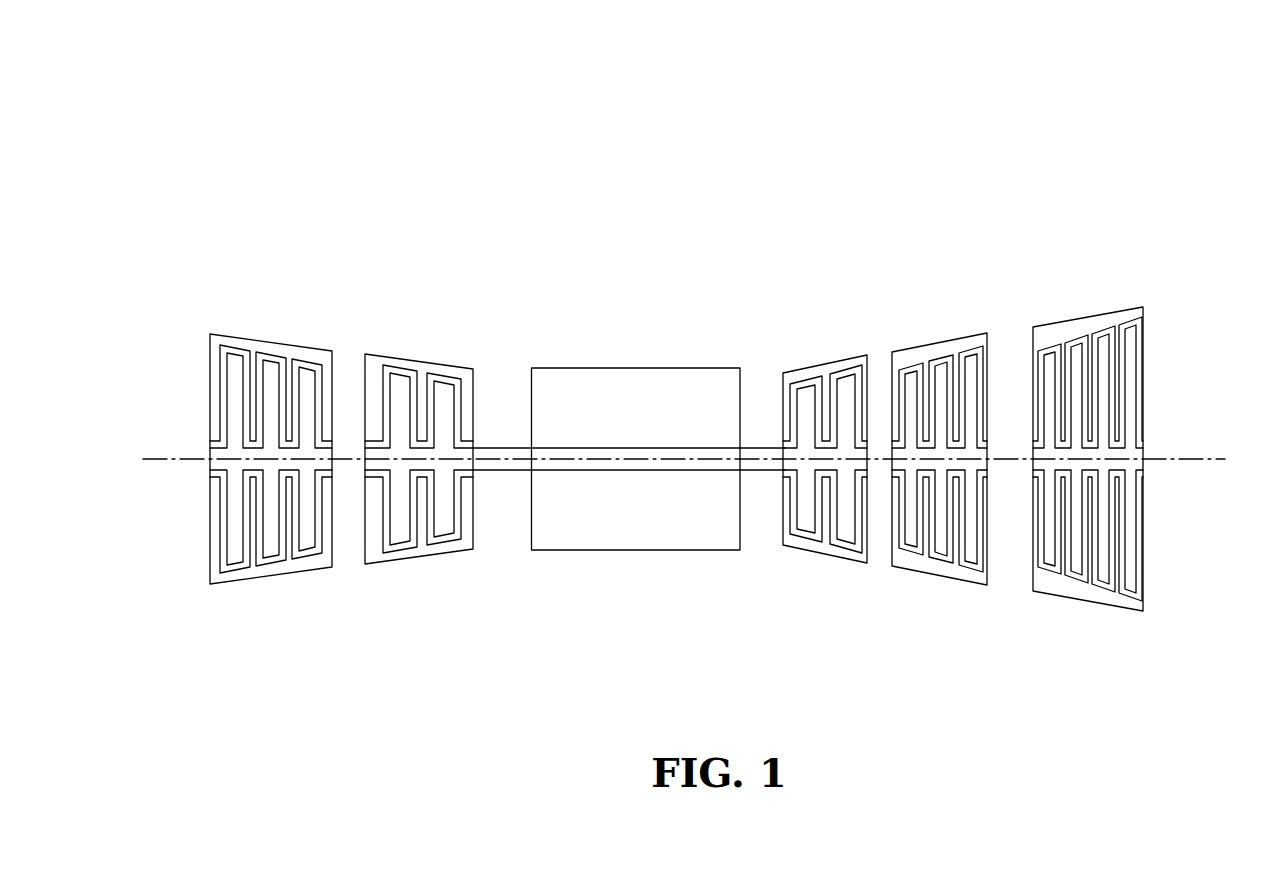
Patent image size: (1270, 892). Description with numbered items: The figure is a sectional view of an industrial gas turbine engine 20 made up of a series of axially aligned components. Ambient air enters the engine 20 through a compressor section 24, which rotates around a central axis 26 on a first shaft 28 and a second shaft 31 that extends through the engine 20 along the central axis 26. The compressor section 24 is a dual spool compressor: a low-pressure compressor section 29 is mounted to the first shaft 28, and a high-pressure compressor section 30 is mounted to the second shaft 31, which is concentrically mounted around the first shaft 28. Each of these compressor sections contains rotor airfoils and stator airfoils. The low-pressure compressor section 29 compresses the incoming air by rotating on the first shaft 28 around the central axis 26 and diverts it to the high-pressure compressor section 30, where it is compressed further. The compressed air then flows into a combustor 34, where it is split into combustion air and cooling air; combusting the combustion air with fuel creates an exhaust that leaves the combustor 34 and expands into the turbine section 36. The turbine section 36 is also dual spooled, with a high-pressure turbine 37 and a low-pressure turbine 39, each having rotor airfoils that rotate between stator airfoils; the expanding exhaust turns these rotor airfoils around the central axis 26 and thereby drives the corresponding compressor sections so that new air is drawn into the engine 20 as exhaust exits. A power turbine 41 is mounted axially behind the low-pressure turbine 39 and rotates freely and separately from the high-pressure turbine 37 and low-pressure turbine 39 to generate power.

The gas turbine engine 20 is at (1092, 177).
The compressor section 24 is at (517, 235).
The central axis 26 is at (1185, 458).
The first shaft 28 is at (595, 459).
The low-pressure compressor section 29 is at (271, 463).
The high-pressure compressor section 30 is at (428, 453).
The second shaft 31 is at (603, 472).
The combustor 34 is at (675, 385).
The turbine section 36 is at (1147, 235).
The high-pressure turbine 37 is at (830, 453).
The low-pressure turbine 39 is at (939, 468).
The power turbine 41 is at (1137, 478).